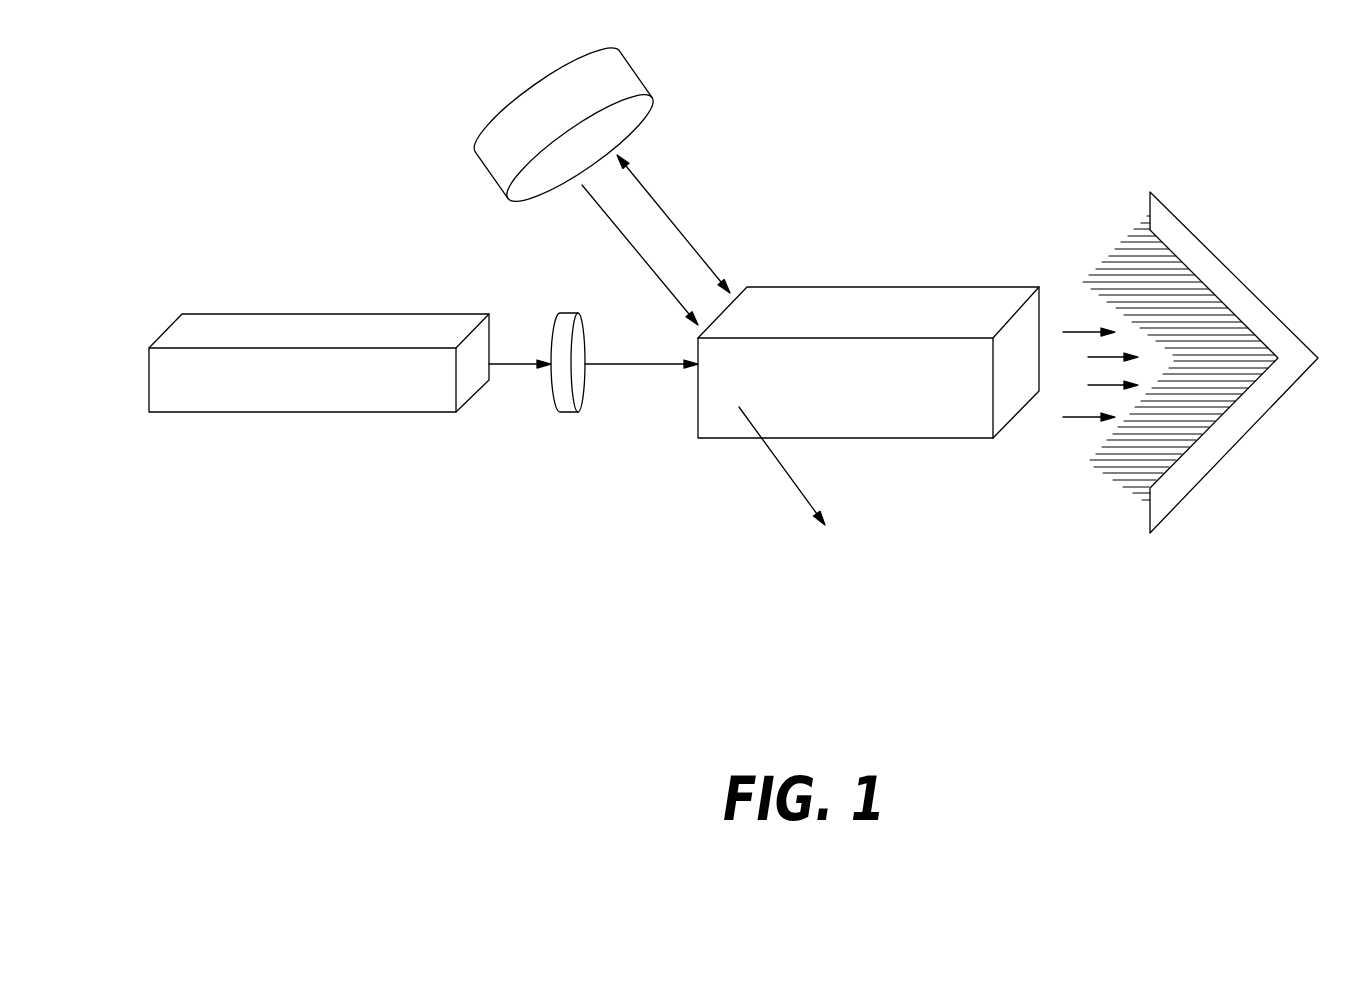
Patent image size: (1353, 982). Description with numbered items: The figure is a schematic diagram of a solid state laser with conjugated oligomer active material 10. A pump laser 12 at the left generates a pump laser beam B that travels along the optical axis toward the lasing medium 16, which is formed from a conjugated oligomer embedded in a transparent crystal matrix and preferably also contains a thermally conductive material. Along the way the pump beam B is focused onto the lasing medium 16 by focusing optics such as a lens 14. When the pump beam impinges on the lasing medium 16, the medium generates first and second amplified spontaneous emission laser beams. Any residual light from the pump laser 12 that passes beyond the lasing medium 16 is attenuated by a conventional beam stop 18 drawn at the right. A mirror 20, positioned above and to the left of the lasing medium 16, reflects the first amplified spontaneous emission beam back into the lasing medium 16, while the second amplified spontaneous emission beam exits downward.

The solid state laser with conjugated oligomer active material 10 is at (1006, 180).
The pump laser 12 is at (233, 413).
The lens 14 is at (571, 413).
The lasing medium 16 is at (988, 287).
The beam stop 18 is at (1197, 237).
The mirror 20 is at (553, 83).